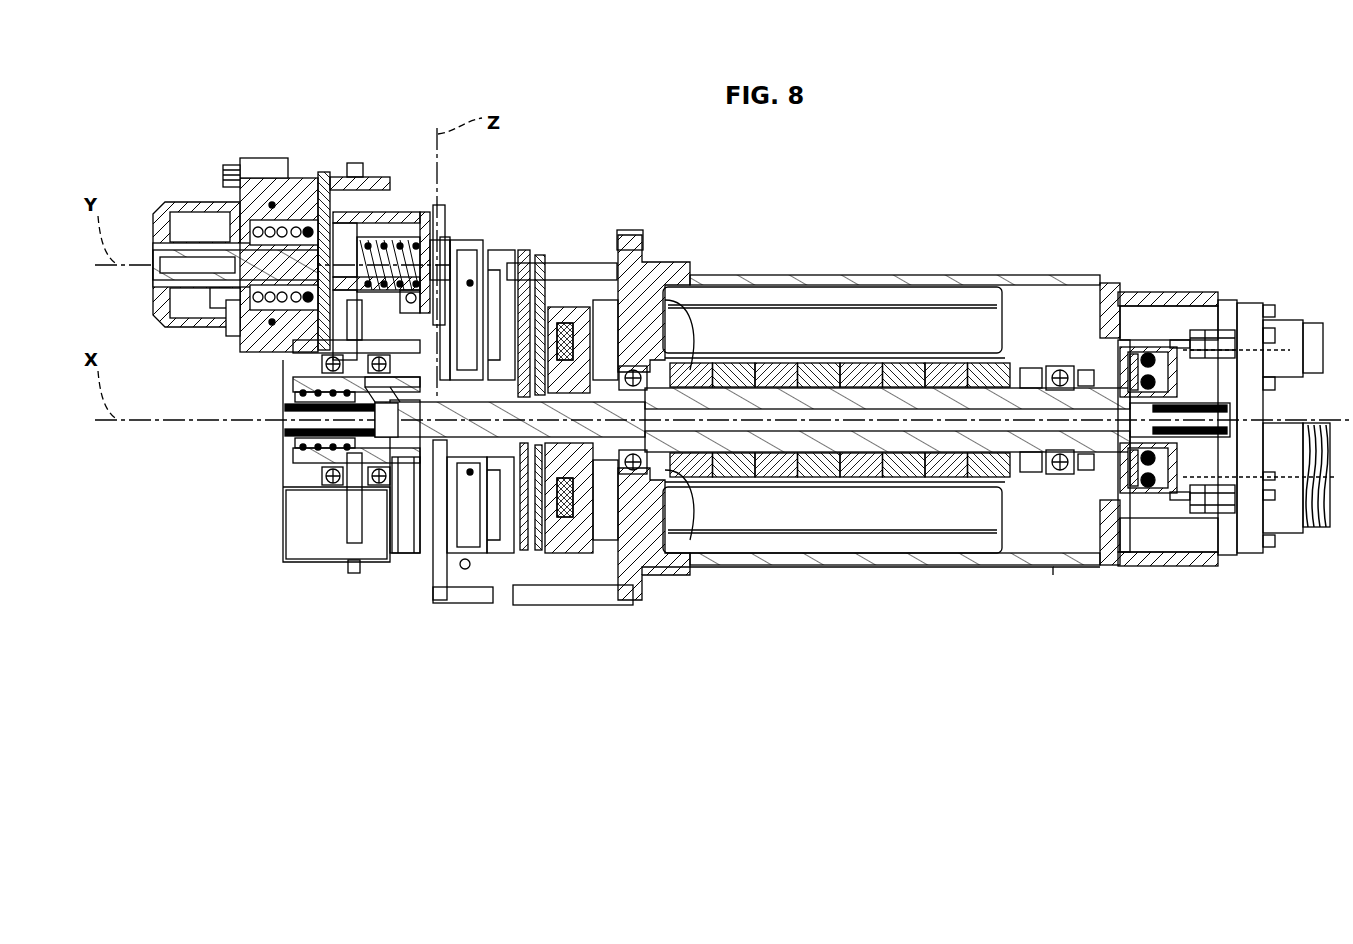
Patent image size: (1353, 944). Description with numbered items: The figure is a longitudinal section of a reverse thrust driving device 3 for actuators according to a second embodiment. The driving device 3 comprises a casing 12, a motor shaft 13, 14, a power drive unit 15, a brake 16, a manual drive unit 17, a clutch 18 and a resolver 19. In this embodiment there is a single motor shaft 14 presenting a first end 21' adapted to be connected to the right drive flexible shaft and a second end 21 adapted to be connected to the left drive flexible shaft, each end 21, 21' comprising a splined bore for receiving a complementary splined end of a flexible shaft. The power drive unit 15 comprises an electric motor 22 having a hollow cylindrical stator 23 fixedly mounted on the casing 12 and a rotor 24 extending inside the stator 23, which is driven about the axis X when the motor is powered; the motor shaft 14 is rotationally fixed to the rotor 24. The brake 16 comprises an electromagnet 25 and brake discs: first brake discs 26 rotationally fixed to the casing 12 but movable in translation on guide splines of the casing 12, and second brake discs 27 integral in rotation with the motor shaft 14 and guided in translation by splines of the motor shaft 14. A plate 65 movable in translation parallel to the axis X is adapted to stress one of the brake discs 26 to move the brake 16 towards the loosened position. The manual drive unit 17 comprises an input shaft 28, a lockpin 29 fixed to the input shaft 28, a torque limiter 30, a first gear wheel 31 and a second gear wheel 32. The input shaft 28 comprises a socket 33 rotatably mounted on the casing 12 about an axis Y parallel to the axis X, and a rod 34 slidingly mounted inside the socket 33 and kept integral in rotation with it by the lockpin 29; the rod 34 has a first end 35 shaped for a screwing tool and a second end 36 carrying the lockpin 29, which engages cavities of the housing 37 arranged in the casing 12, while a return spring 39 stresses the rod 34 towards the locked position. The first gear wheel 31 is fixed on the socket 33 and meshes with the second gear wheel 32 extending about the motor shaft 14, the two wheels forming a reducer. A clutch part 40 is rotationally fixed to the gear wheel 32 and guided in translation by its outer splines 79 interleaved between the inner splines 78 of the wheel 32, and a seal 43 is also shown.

The driving device 3 is at (195, 80).
The casing 12 is at (846, 278).
The first motor shaft 13 is at (1082, 440).
The motor shaft 14 is at (425, 447).
The power drive unit 15 is at (859, 465).
The brake 16 is at (537, 428).
The manual drive unit 17 is at (275, 220).
The clutch 18 is at (320, 461).
The resolver 19 is at (1125, 560).
The second end 21 is at (309, 451).
The first end 21' is at (1184, 361).
The electric motor 22 is at (794, 513).
The stator 23 is at (850, 505).
The rotor 24 is at (650, 596).
The electromagnet 25 is at (567, 497).
The first brake discs 26 is at (530, 540).
The second brake discs 27 is at (527, 305).
The input shaft 28 is at (223, 296).
The lockpin 29 is at (338, 245).
The torque limiter 30 is at (232, 338).
The first gear wheel 31 is at (367, 242).
The second gear wheel 32 is at (360, 538).
The socket 33 is at (215, 240).
The rod 34 is at (165, 268).
The first end 35 is at (162, 268).
The second end 36 is at (347, 255).
The housing 37 is at (318, 215).
The return spring 39 is at (424, 239).
The clutch part 40 is at (413, 472).
The seal 43 is at (357, 492).
The plate 65 is at (450, 520).
The inner splines 78 is at (372, 402).
The outer splines 79 is at (385, 378).